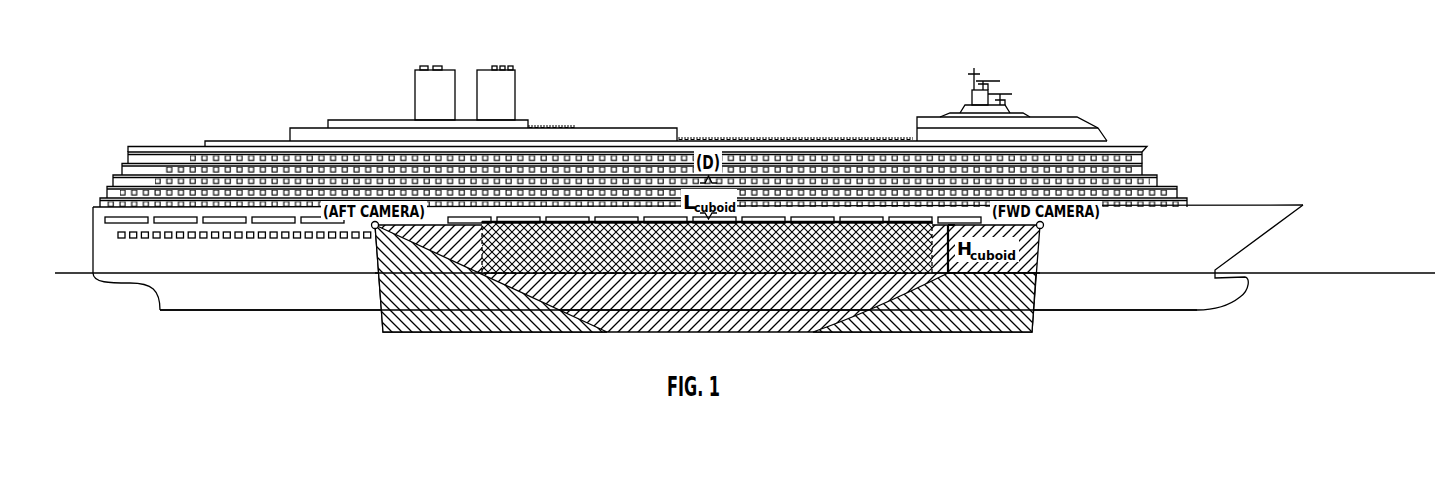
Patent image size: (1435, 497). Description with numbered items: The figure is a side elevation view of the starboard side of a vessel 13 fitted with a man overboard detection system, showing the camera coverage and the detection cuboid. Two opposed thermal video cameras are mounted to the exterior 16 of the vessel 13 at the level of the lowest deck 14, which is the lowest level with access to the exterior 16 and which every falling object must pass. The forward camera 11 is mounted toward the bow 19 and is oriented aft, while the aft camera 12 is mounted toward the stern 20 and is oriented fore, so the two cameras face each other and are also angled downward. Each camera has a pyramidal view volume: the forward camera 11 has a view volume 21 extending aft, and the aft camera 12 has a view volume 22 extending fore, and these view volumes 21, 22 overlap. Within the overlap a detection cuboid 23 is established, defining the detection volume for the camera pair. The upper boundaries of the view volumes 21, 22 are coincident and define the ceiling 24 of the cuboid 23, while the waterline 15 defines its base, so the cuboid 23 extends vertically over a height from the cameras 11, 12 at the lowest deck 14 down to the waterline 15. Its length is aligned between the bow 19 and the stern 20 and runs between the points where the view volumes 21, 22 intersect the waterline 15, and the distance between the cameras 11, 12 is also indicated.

The forward camera 11 is at (1042, 228).
The aft camera 12 is at (375, 228).
The vessel 13 is at (1105, 138).
The lowest deck 14 is at (286, 238).
The waterline 15 is at (1138, 272).
The exterior 16 is at (1123, 253).
The bow 19 is at (1303, 205).
The stern 20 is at (85, 205).
The view volume 21 is at (885, 298).
The view volume 22 is at (527, 295).
The detection cuboid 23 is at (820, 226).
The ceiling 24 is at (613, 223).